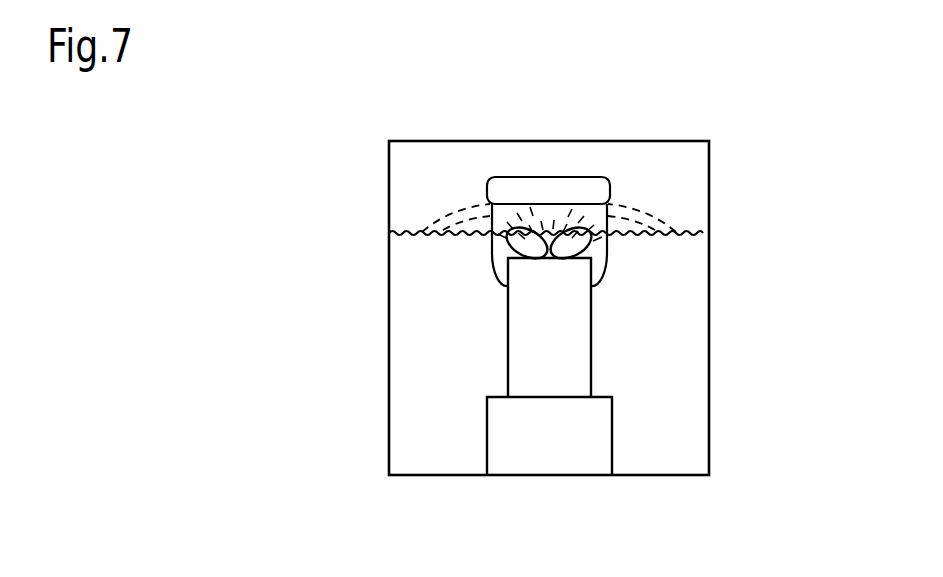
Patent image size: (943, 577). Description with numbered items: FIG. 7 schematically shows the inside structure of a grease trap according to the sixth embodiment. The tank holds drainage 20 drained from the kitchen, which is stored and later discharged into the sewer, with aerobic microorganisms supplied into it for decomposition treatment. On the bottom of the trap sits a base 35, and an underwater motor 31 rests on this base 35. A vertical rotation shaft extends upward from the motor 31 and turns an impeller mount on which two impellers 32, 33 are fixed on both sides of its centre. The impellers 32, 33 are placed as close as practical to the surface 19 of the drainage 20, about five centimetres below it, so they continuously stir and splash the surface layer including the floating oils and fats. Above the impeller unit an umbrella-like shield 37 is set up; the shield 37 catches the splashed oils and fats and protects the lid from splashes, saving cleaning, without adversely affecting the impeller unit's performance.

The surface 19 is at (410, 232).
The drainage 20 is at (409, 390).
The underwater motor 31 is at (577, 360).
The impeller 32 is at (506, 245).
The impeller 33 is at (596, 243).
The base 35 is at (602, 442).
The umbrella-like shield 37 is at (550, 190).